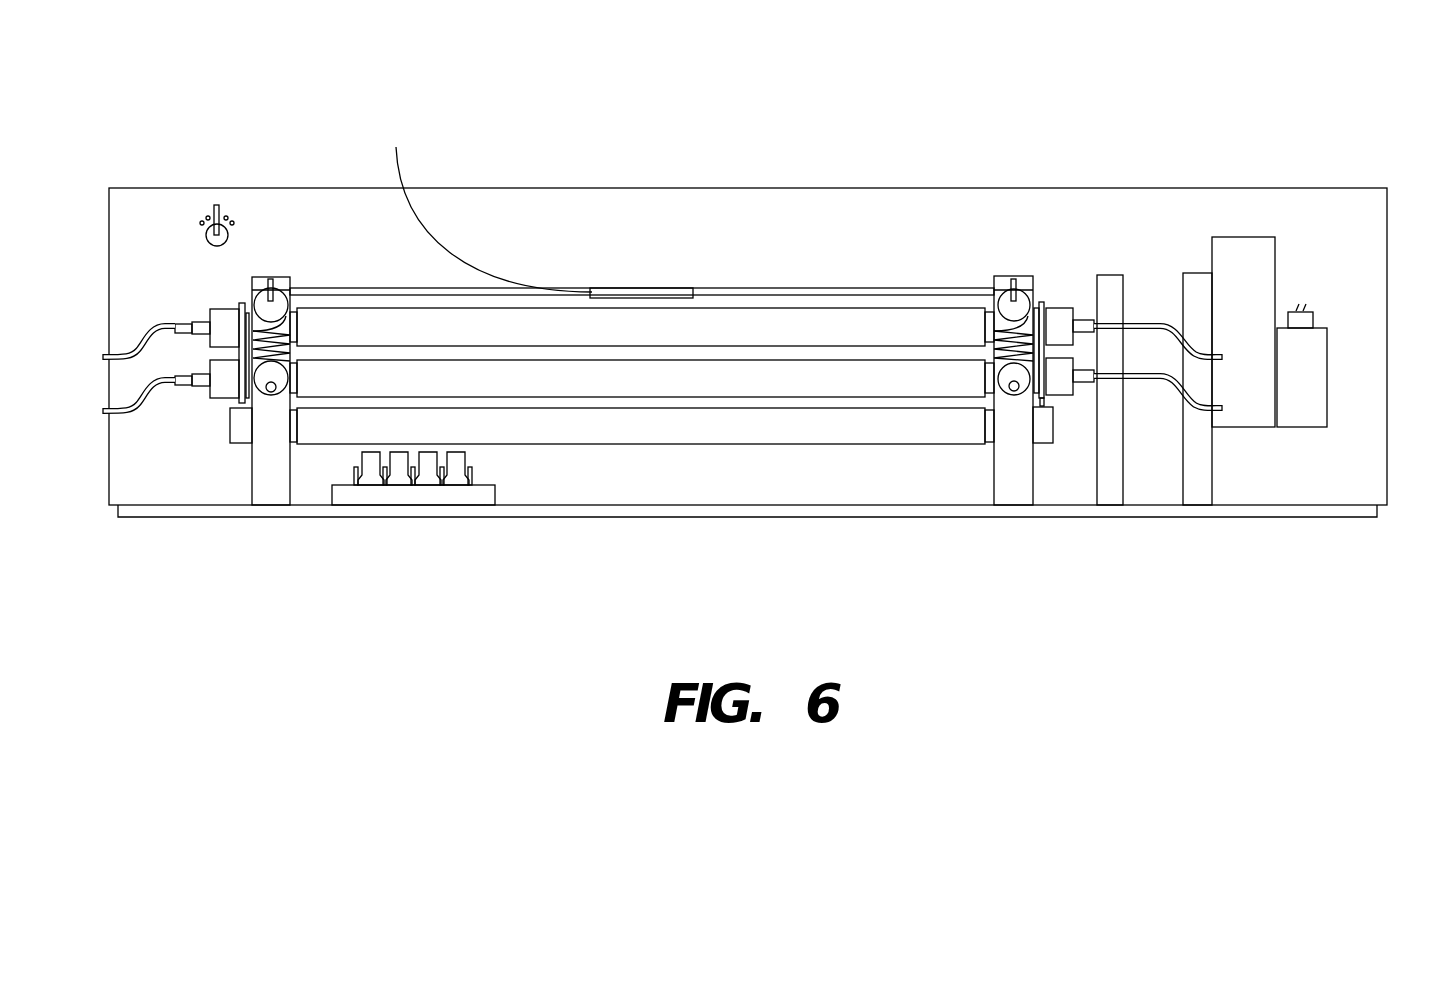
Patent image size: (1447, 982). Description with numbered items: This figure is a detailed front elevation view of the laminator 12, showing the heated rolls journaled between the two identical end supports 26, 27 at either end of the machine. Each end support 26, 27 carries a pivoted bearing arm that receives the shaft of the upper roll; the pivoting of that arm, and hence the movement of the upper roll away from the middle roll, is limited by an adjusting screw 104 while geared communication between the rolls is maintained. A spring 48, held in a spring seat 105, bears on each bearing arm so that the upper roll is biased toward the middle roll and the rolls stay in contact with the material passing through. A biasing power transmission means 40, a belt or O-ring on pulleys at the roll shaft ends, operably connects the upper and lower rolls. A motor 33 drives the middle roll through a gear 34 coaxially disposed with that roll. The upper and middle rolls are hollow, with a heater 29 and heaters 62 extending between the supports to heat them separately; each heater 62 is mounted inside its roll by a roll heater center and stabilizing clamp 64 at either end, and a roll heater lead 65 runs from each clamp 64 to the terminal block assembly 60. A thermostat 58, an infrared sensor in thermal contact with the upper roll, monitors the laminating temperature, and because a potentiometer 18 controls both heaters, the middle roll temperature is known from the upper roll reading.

The laminator 12 is at (1328, 187).
The potentiometer 18 is at (210, 235).
The end support 26 is at (265, 497).
The end support 27 is at (1008, 495).
The heater 29 is at (1112, 495).
The motor 33 is at (1342, 341).
The gear 34 is at (1042, 407).
The biasing power transmission means 40 is at (300, 323).
The spring 48 is at (250, 341).
The thermostat 58 is at (445, 240).
The terminal block assembly 60 is at (350, 497).
The heater 62 is at (200, 327).
The roll heater center and stabilizing clamp 64 is at (1057, 388).
The roll heater lead 65 is at (125, 355).
The adjusting screw 104 is at (270, 290).
The spring seat 105 is at (1014, 282).